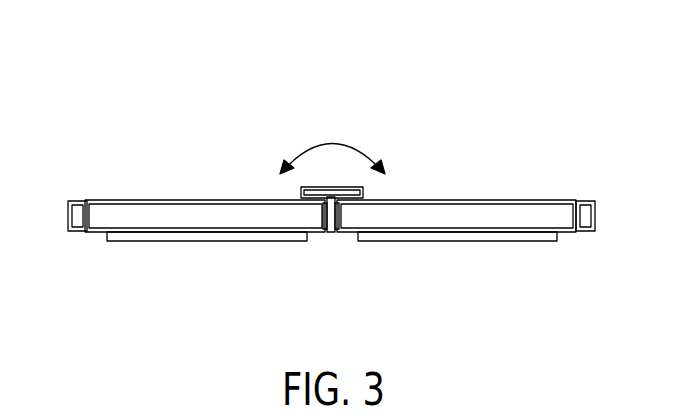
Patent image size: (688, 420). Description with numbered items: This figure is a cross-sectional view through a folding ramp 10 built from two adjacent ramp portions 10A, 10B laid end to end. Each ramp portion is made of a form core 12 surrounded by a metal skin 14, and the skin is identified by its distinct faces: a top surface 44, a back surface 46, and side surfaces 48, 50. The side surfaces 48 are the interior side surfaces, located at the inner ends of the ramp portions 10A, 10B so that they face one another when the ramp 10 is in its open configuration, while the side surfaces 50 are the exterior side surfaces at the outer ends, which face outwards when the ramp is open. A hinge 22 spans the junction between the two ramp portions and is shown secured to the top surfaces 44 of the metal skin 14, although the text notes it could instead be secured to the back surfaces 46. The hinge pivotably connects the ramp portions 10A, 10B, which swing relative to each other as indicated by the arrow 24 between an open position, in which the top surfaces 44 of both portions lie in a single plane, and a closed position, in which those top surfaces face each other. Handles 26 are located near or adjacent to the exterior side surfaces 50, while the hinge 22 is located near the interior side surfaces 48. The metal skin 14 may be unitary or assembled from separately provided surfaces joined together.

The ramp 10 is at (546, 69).
The ramp portion 10A is at (200, 188).
The ramp portion 10B is at (498, 188).
The form core 12 is at (253, 226).
The metal skin 14 is at (147, 199).
The hinge 22 is at (187, 241).
The arrow 24 is at (342, 143).
The handle 26 is at (68, 220).
The top surface 44 is at (108, 199).
The back surface 46 is at (92, 235).
The interior side surface 48 is at (330, 206).
The exterior side surface 50 is at (72, 213).